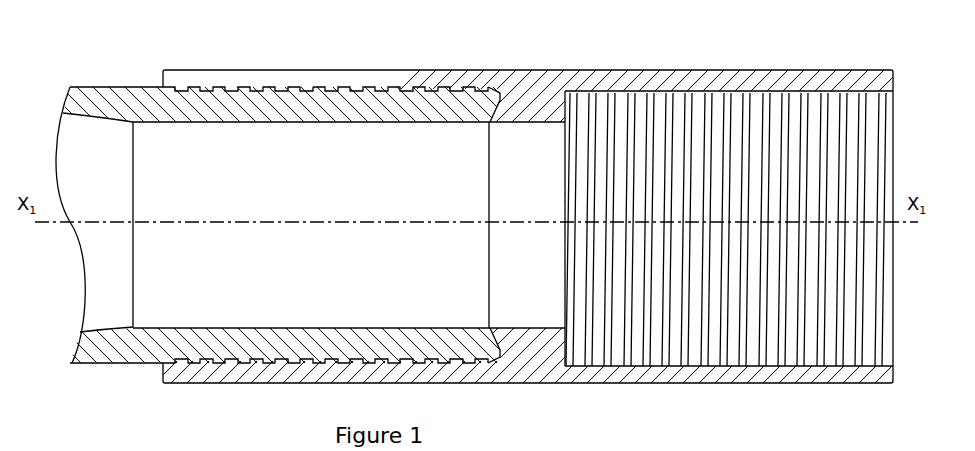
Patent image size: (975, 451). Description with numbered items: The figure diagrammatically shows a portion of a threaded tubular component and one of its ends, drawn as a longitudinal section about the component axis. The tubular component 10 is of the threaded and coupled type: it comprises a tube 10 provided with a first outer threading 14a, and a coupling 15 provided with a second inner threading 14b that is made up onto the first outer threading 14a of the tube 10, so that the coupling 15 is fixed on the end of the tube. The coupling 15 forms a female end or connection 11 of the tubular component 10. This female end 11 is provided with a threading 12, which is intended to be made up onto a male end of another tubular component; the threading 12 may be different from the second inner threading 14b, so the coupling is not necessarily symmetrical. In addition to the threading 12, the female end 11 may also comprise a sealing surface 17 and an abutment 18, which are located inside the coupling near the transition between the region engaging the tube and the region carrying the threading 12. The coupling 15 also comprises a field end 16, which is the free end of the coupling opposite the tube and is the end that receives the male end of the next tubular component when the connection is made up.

The tubular component 10 is at (110, 98).
The female end or connection 11 is at (596, 61).
The threading 12 is at (773, 87).
The first outer threading 14a is at (378, 50).
The second inner threading 14b is at (248, 85).
The coupling 15 is at (508, 88).
The field end 16 is at (895, 75).
The sealing surface 17 is at (558, 340).
The abutment 18 is at (557, 333).